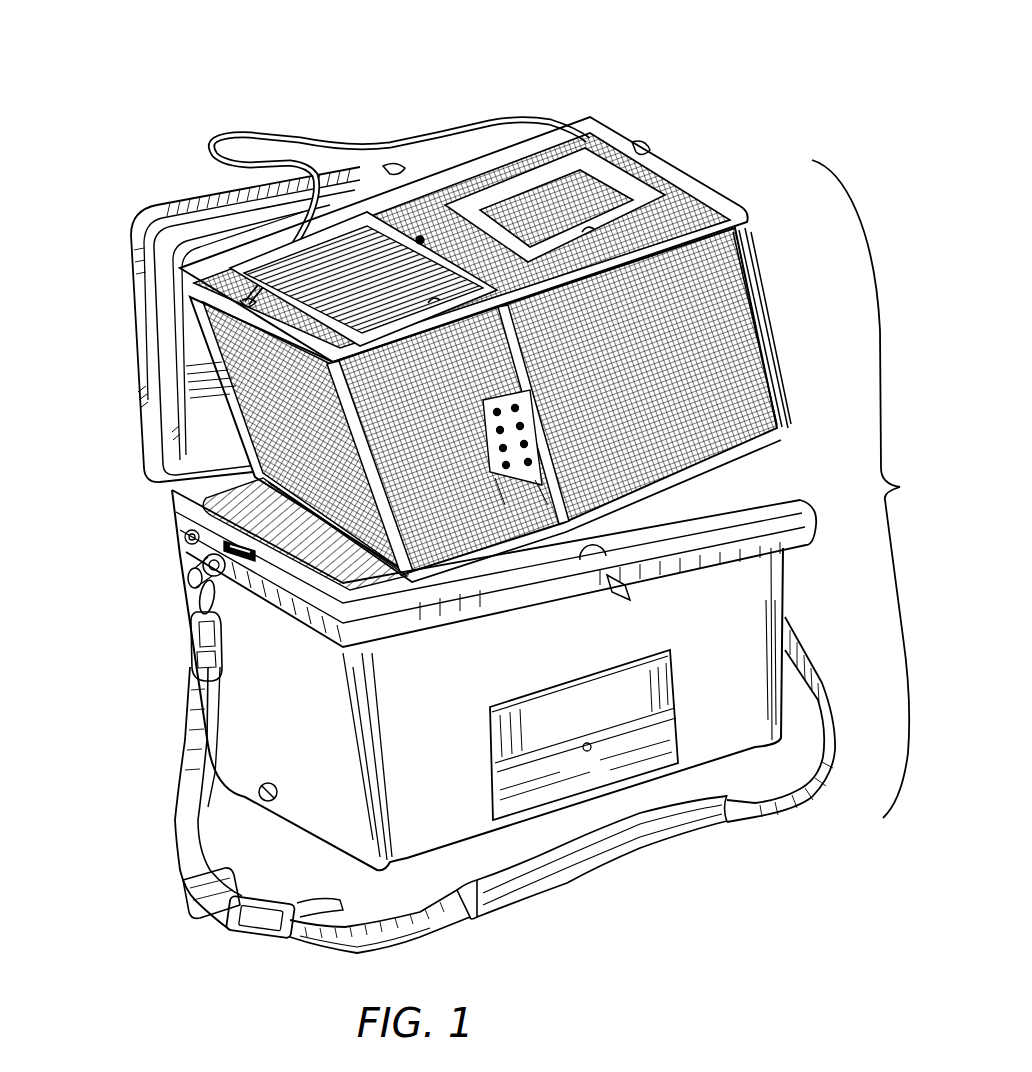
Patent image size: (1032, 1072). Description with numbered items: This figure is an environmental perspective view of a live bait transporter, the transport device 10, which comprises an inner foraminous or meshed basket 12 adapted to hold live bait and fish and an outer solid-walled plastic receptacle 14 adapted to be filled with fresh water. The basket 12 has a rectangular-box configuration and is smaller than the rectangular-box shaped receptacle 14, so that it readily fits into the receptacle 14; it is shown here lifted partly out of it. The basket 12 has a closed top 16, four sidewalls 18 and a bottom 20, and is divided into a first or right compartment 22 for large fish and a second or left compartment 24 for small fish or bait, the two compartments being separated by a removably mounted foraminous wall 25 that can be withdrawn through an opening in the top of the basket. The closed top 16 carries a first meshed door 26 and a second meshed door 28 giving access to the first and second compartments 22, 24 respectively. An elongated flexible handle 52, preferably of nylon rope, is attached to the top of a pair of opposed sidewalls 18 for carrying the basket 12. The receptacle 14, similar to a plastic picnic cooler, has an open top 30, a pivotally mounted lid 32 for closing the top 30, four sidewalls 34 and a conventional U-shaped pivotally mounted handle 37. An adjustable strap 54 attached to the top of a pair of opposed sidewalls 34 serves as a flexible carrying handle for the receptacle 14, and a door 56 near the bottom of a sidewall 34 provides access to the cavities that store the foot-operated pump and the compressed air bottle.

The transport device 10 is at (875, 489).
The inner foraminous basket 12 is at (628, 103).
The outer solid-walled plastic receptacle 14 is at (318, 850).
The closed top 16 is at (503, 143).
The sidewalls 18 is at (235, 370).
The bottom 20 is at (772, 445).
The first or right compartment 22 is at (655, 465).
The second or left compartment 24 is at (457, 545).
The removably mounted foraminous wall 25 is at (425, 236).
The first meshed door 26 is at (653, 200).
The second meshed door 28 is at (377, 250).
The open top 30 is at (260, 513).
The pivotally mounted lid 32 is at (210, 413).
The sidewalls 34 is at (787, 617).
The U-shaped pivotally mounted handle 37 is at (814, 503).
The elongated flexible handle 52 is at (273, 130).
The adjustable strap 54 is at (813, 808).
The door 56 is at (660, 733).